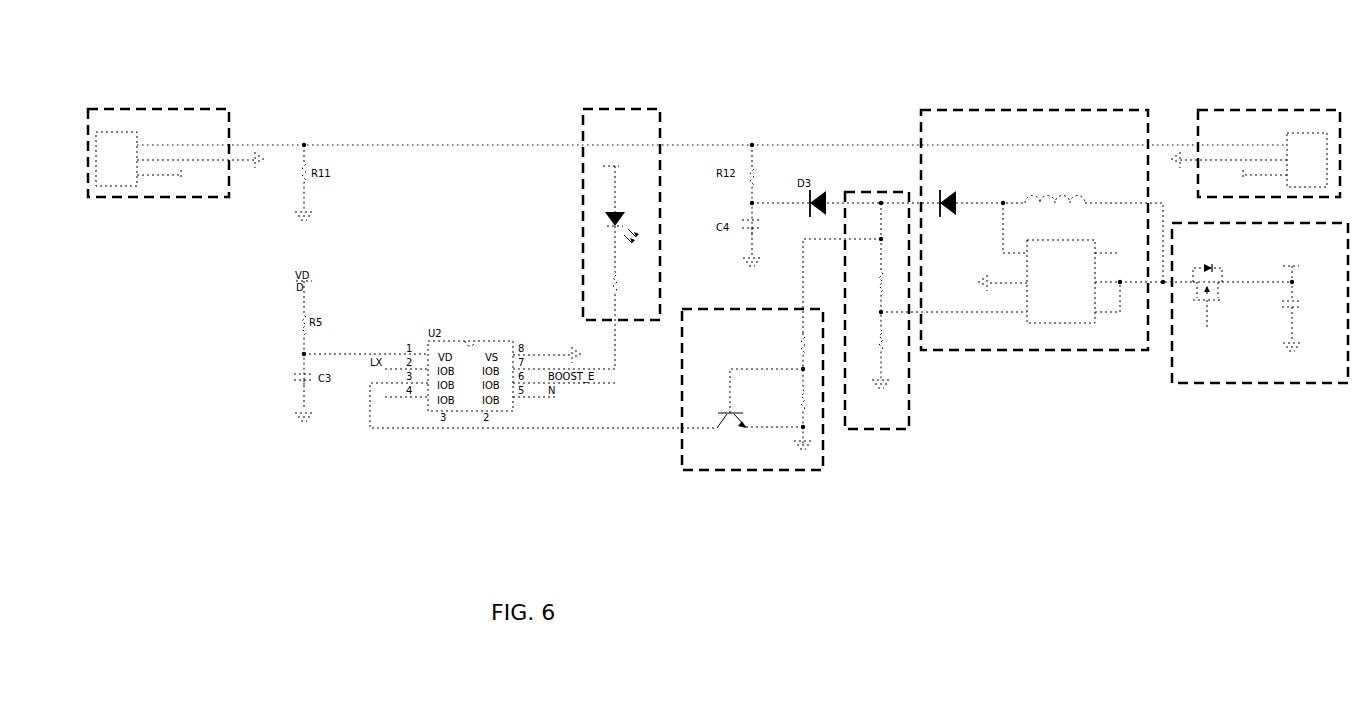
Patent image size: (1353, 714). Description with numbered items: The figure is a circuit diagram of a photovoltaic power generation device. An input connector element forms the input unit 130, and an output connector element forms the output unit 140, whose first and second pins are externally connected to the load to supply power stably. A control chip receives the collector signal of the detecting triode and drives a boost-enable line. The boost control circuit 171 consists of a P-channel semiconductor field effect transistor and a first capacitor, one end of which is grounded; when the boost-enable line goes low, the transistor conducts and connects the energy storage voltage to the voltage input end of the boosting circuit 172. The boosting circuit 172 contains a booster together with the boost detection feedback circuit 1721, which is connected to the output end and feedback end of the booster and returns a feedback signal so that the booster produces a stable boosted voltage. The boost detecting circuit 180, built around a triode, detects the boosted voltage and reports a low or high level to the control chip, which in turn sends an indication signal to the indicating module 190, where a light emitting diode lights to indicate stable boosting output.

The input unit 130 is at (152, 109).
The output unit 140 is at (1267, 110).
The boost control circuit 171 is at (1208, 383).
The boosting circuit 172 is at (993, 110).
The boost detection feedback circuit 1721 is at (890, 429).
The boost detecting circuit 180 is at (755, 470).
The indicating module 190 is at (620, 109).